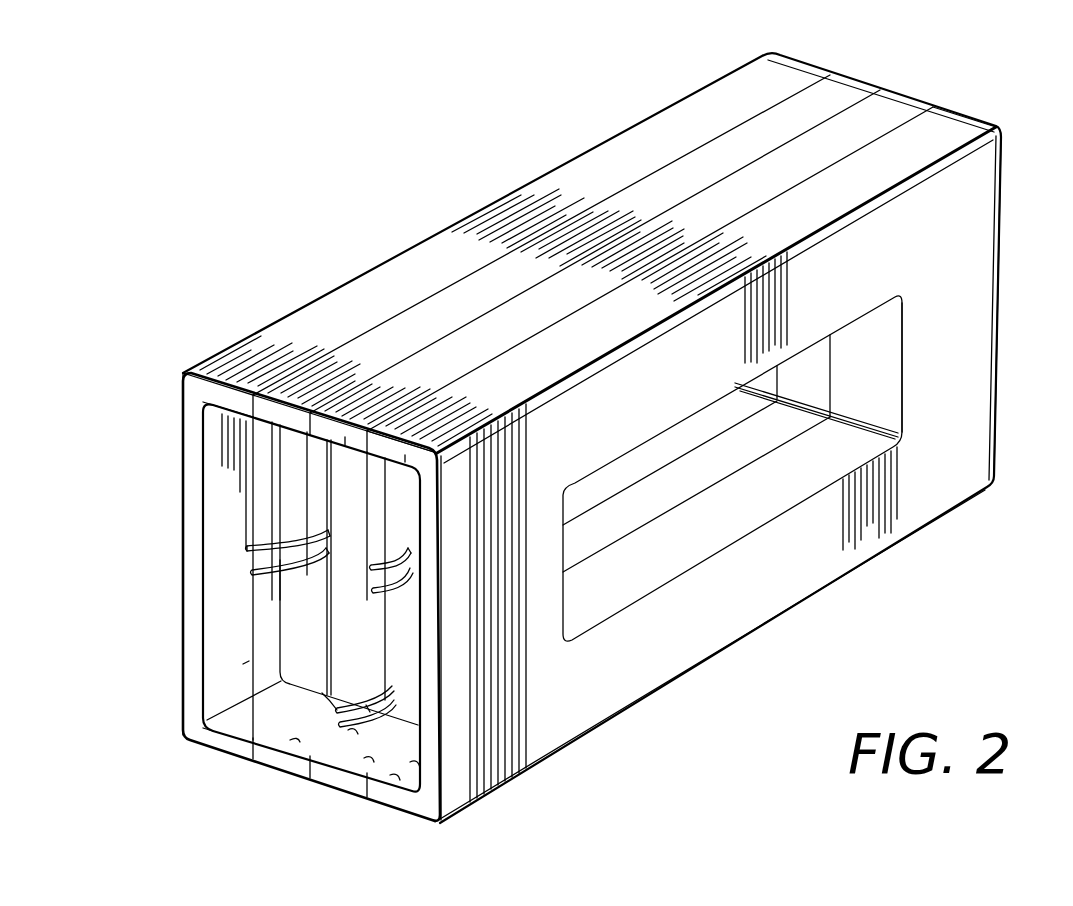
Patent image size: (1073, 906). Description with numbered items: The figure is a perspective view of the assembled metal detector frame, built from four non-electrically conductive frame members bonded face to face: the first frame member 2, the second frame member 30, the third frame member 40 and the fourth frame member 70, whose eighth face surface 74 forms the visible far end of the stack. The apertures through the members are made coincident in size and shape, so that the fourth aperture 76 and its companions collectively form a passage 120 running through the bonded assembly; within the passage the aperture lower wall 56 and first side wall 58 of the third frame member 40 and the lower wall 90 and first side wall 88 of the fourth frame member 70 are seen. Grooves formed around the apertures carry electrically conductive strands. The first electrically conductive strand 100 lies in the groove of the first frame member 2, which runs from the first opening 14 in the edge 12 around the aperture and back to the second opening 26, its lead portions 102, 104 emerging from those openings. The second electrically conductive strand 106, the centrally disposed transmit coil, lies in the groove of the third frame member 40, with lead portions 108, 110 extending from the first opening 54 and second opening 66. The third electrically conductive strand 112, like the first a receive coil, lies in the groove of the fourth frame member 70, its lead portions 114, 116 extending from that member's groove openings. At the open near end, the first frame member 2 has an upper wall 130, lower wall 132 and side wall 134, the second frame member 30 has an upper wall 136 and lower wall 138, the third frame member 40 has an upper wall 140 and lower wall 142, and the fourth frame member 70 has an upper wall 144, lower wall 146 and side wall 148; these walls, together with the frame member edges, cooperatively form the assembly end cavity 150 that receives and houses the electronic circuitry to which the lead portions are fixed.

The first frame member 2 is at (793, 73).
The second frame member 30 is at (855, 88).
The third frame member 40 is at (540, 308).
The fourth frame member 70 is at (582, 338).
The eighth face surface 74 is at (982, 227).
The fourth aperture 76 is at (878, 383).
The passage 120 is at (660, 560).
The aperture lower wall 56 is at (670, 488).
The lower wall 90 is at (732, 508).
The first side wall 58 is at (802, 374).
The first side wall 88 is at (848, 358).
The upper wall 130 is at (208, 395).
The upper wall 136 is at (275, 410).
The side wall 134 is at (220, 643).
The upper wall 140 is at (345, 437).
The upper wall 144 is at (405, 455).
The edge 12 is at (285, 636).
The first electrically conductive strand 100 is at (300, 548).
The first opening 14 is at (327, 527).
The second opening 26 is at (330, 536).
The lead portion 102 is at (247, 548).
The lead portion 104 is at (252, 572).
The third electrically conductive strand 112 is at (397, 560).
The lead portion 114 is at (371, 570).
The lead portion 116 is at (388, 592).
The assembly end cavity 150 is at (249, 661).
The second opening 66 is at (397, 675).
The first opening 54 is at (395, 700).
The lead portion 110 is at (325, 700).
The second electrically conductive strand 106 is at (366, 705).
The lower wall 132 is at (215, 725).
The lower wall 138 is at (297, 737).
The lead portion 108 is at (352, 733).
The lower wall 142 is at (368, 763).
The lower wall 146 is at (393, 780).
The side wall 148 is at (420, 768).